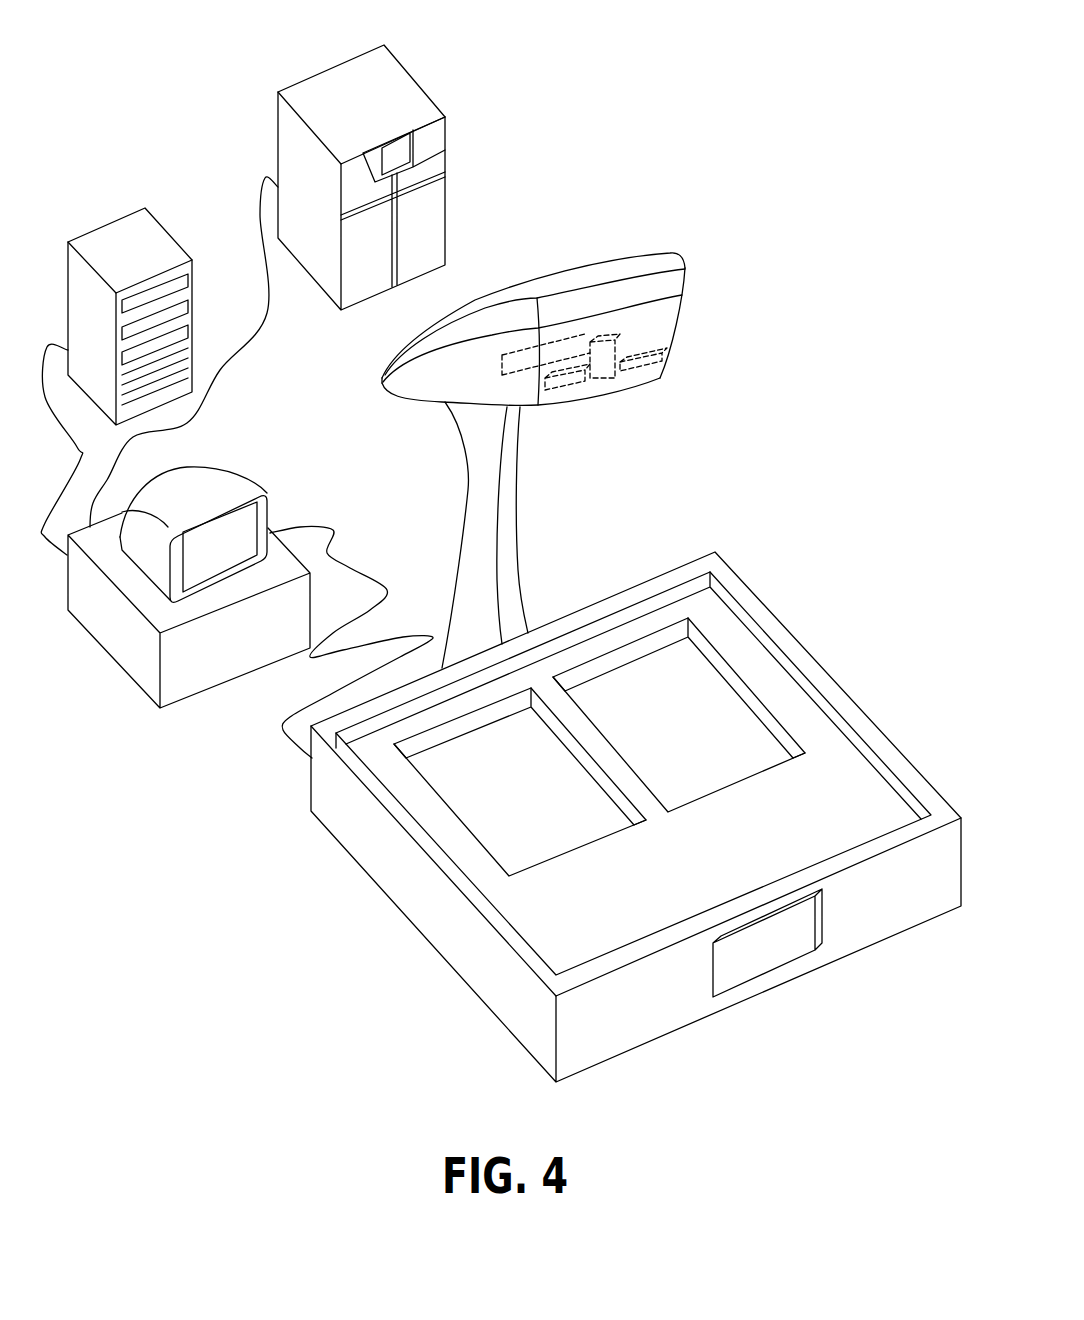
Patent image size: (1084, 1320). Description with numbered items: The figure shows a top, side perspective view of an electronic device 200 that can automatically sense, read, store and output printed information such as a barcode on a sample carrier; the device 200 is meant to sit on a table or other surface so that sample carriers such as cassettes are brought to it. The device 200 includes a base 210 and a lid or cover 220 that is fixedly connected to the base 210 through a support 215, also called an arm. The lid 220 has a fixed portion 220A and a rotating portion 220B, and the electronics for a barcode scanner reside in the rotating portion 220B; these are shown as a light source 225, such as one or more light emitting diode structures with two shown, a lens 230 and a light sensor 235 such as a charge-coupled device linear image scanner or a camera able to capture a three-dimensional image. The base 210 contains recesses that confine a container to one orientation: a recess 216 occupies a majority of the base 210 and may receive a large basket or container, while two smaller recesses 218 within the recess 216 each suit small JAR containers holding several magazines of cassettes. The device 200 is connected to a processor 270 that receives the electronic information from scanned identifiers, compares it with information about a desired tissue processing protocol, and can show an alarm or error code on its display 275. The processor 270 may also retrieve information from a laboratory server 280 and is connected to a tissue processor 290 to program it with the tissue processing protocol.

The device 200 is at (738, 228).
The base 210 is at (748, 583).
The support 215 is at (462, 537).
The recess 216 is at (397, 770).
The recess 218 is at (523, 798).
The lid 220 is at (559, 366).
The fixed portion 220A is at (678, 271).
The rotating portion 220B is at (683, 312).
The light source 225 is at (540, 388).
The lens 230 is at (605, 388).
The light sensor 235 is at (502, 363).
The processor 270 is at (183, 687).
The display 275 is at (218, 535).
The server 280 is at (172, 232).
The tissue processor 290 is at (448, 137).